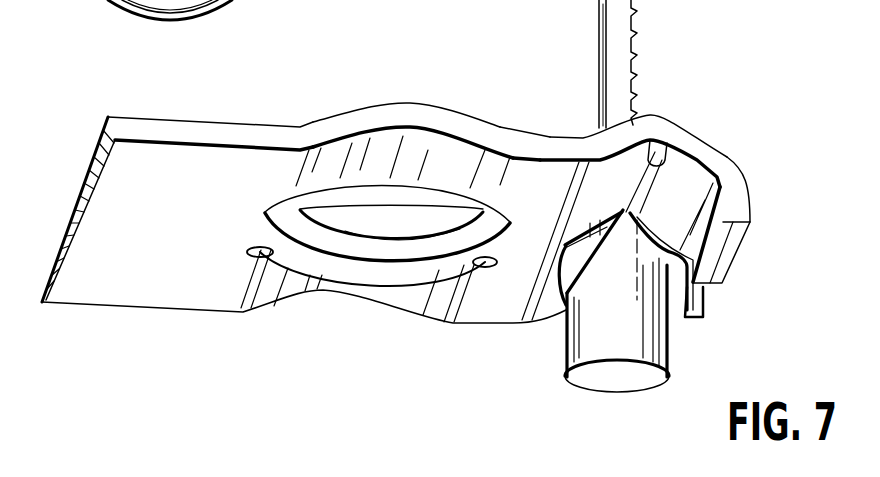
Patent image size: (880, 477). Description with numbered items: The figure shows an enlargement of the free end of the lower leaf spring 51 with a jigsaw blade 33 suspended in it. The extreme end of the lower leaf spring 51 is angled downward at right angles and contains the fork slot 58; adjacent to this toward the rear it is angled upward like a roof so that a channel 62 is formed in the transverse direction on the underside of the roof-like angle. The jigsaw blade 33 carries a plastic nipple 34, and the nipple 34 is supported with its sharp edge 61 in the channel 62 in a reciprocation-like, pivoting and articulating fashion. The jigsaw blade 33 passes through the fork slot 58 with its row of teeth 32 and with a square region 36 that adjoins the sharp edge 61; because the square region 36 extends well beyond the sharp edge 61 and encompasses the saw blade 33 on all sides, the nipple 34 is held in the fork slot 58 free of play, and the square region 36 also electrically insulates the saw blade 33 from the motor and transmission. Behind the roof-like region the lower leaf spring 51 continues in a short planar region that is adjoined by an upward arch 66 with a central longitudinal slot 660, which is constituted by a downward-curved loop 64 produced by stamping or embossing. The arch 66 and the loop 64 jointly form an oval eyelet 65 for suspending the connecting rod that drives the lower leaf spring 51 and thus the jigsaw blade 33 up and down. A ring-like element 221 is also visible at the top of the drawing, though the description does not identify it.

The ring 221 is at (290, 0).
The lower leaf spring 51 is at (135, 272).
The arch 66 is at (388, 163).
The slot 660 is at (422, 225).
The eyelet 65 is at (363, 203).
The loop 64 is at (400, 268).
The jigsaw blade 33 is at (617, 42).
The row of teeth 32 is at (633, 32).
The channel 62 is at (657, 168).
The sharp edge 61 is at (625, 207).
The fork slot 58 is at (697, 294).
The square region 36 is at (565, 309).
The nipple 34 is at (618, 380).